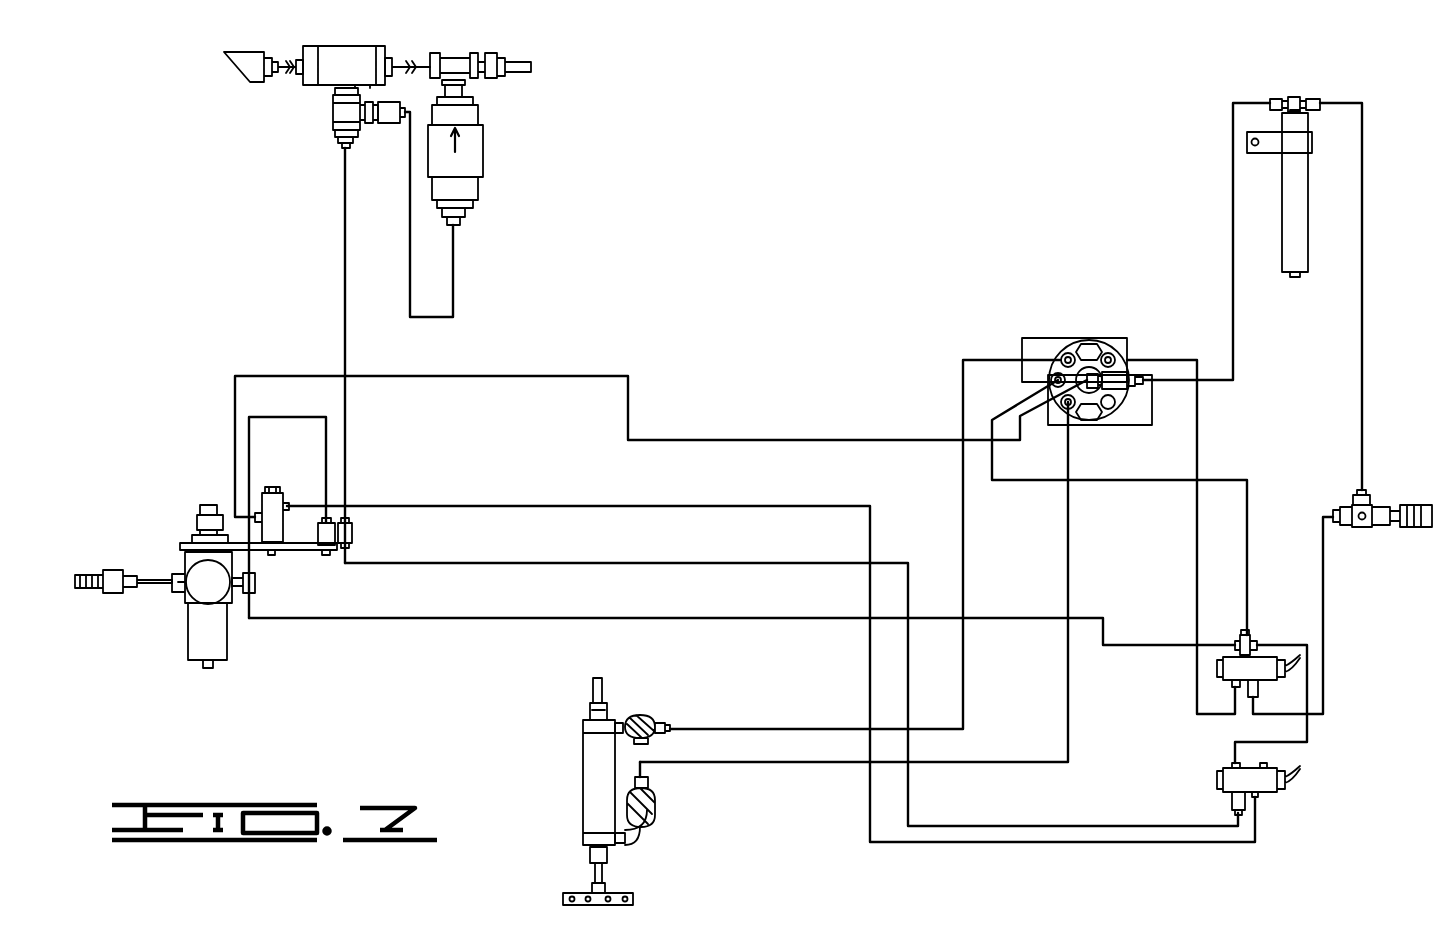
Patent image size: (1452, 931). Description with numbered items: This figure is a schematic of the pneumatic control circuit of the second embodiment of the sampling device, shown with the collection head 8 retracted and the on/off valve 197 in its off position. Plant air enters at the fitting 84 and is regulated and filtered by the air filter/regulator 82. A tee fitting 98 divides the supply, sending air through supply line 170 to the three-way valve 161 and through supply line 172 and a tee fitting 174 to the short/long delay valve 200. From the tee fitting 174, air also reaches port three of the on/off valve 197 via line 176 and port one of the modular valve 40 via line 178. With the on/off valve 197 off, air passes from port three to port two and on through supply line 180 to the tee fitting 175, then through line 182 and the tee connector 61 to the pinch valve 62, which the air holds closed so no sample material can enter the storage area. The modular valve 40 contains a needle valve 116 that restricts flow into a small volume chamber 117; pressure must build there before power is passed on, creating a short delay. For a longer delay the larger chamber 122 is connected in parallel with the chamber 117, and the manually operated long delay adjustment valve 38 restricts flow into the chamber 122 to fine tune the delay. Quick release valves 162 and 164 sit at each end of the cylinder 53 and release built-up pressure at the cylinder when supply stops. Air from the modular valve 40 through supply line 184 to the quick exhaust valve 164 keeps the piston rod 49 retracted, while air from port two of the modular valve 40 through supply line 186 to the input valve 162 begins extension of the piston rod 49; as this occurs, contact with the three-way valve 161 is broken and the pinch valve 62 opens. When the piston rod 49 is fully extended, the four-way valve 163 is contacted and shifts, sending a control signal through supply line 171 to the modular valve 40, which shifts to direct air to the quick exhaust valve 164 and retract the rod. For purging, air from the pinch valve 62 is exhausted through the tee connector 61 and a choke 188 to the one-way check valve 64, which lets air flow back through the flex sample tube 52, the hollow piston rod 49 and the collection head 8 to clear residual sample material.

The pinch valve 62 is at (320, 85).
The tee connector 61 is at (337, 118).
The choke 188 is at (385, 124).
The flex sample tube 52 is at (521, 72).
The check valve 64 is at (480, 163).
The line 182 is at (343, 255).
The supply line 171 is at (493, 376).
The supply line 170 is at (250, 437).
The 4-way valve 163 is at (262, 500).
The three-way valve 161 is at (330, 527).
The tee fitting 175 is at (355, 532).
The fitting 84 is at (118, 570).
The tee fitting 98 is at (257, 583).
The air filter/regulator 82 is at (188, 632).
The supply line 180 is at (572, 563).
The supply line 172 is at (482, 620).
The small volume chamber 117 is at (1040, 338).
The needle valve 116 is at (1108, 353).
The modular valve 40 is at (1112, 426).
The chamber 122 is at (1305, 242).
The long delay adjustment valve 38 is at (1372, 505).
The line 178 is at (1250, 522).
The tee fitting 174 is at (1253, 638).
The short/long delay valve 200 is at (1272, 690).
The line 176 is at (1310, 735).
The on/off valve 197 is at (1270, 795).
The quick release valve 162 is at (656, 714).
The supply line 186 is at (770, 729).
The supply line 184 is at (765, 762).
The cylinder 53 is at (582, 771).
The quick release valve 164 is at (656, 821).
The piston rod 49 is at (592, 873).
The collection head 8 is at (612, 893).